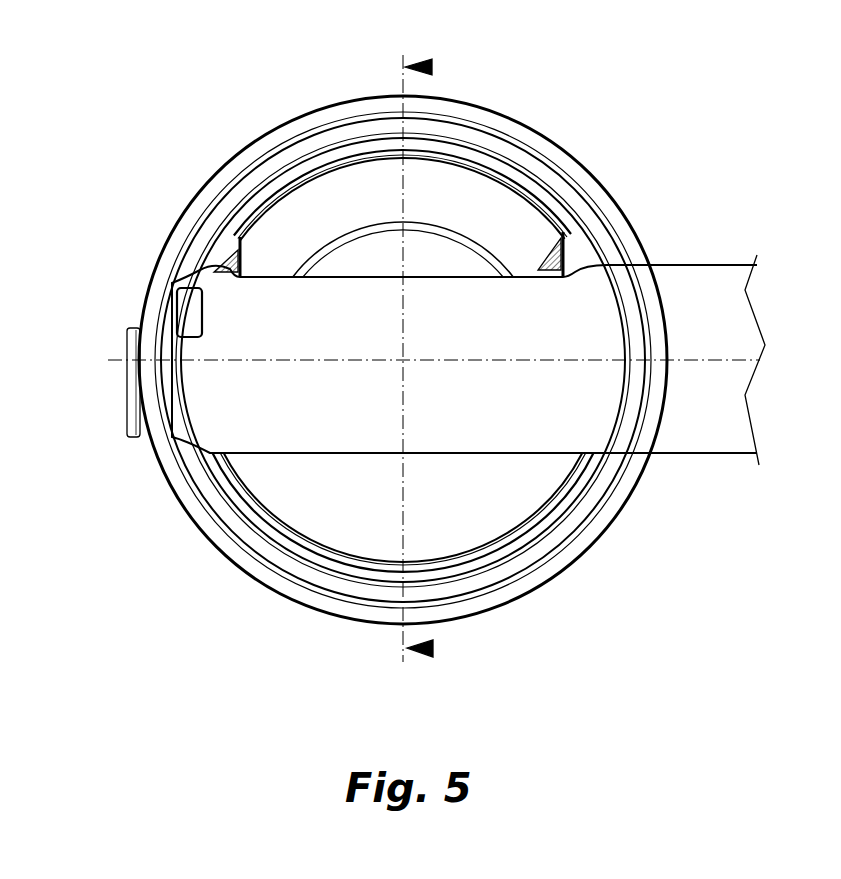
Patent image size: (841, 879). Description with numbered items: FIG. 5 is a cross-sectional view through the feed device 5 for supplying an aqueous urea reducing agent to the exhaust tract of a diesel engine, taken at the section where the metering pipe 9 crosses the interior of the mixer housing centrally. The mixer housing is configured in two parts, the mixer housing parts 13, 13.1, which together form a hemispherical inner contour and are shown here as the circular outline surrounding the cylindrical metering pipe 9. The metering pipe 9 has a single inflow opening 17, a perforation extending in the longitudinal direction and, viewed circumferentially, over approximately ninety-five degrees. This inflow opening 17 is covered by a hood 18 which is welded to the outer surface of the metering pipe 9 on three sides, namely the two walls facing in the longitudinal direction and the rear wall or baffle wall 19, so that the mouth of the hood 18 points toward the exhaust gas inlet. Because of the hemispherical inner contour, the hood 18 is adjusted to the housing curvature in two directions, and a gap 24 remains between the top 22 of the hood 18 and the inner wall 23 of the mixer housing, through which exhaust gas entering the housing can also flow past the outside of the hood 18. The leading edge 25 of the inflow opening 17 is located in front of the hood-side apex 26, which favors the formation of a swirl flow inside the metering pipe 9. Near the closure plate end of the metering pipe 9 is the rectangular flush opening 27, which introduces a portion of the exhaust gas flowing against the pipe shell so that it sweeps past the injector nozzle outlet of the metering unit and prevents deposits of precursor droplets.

The feed device 5 is at (657, 147).
The metering pipe 9 is at (468, 360).
The mixer housing part 13 is at (250, 582).
The mixer housing part 13.1 is at (403, 512).
The inflow opening 17 is at (512, 268).
The hood 18 is at (298, 202).
The baffle wall 19 is at (403, 249).
The top of the hood 22 is at (403, 360).
The inner wall of the mixer housing 23 is at (270, 184).
The gap 24 is at (315, 160).
The leading edge of the inflow opening 25 is at (546, 268).
The hood-side apex 26 is at (222, 262).
The flush opening 27 is at (200, 312).